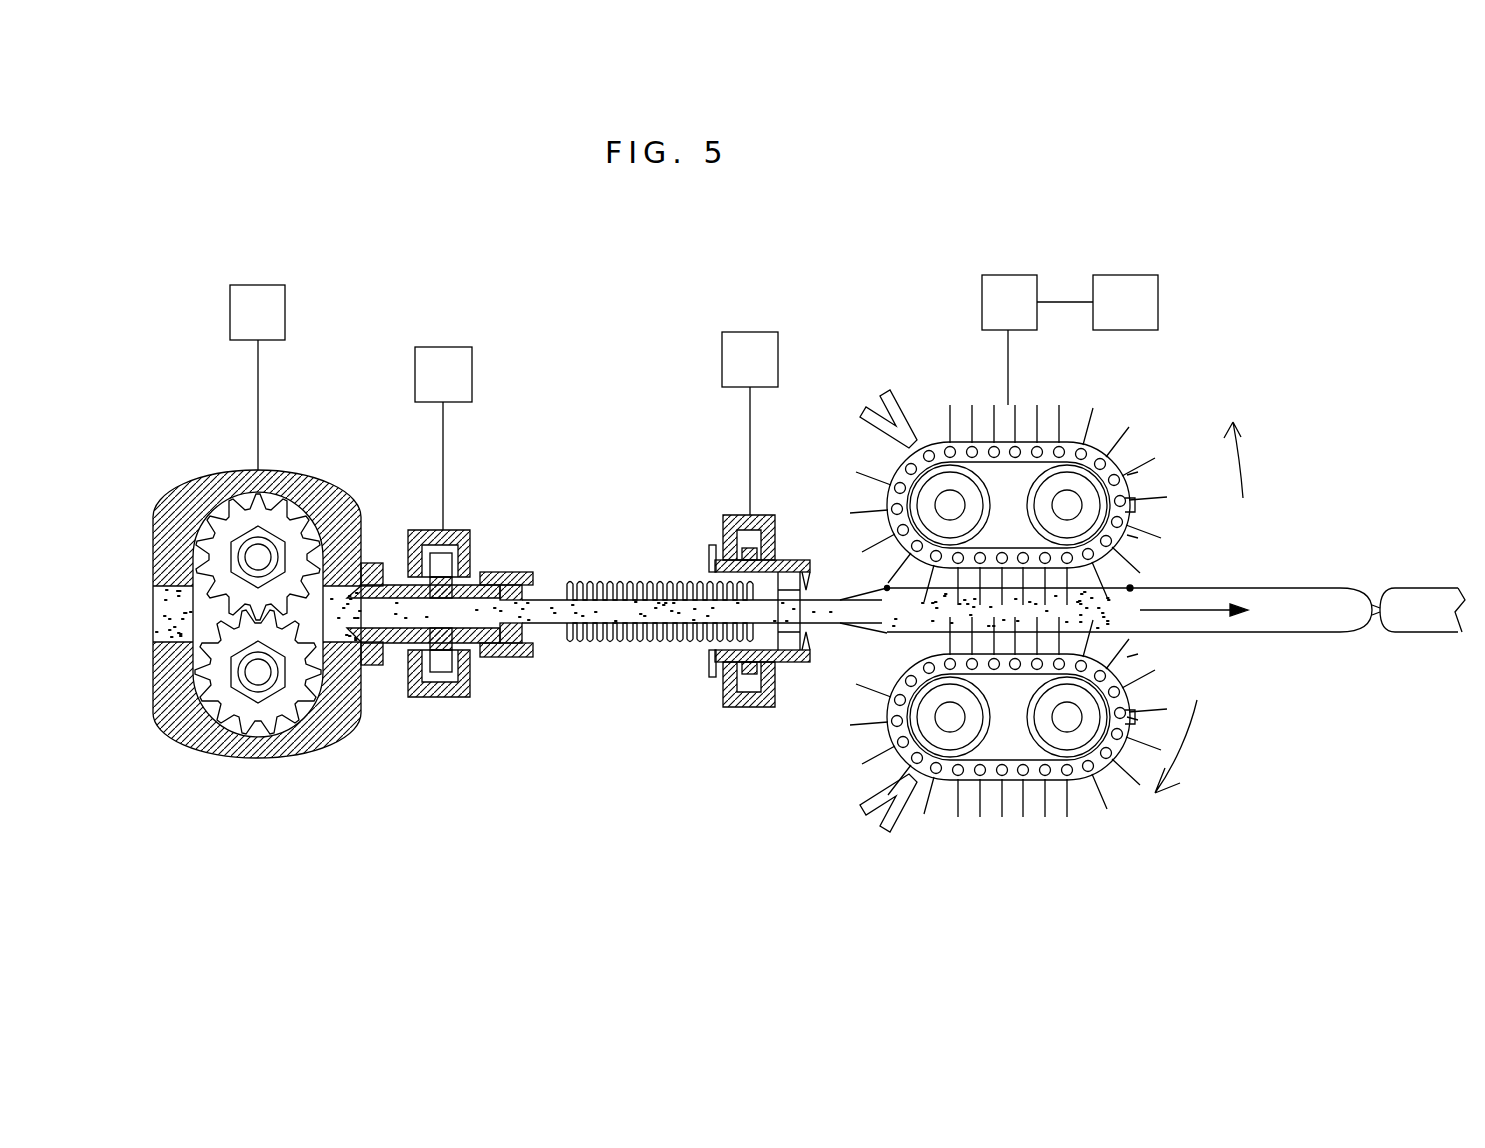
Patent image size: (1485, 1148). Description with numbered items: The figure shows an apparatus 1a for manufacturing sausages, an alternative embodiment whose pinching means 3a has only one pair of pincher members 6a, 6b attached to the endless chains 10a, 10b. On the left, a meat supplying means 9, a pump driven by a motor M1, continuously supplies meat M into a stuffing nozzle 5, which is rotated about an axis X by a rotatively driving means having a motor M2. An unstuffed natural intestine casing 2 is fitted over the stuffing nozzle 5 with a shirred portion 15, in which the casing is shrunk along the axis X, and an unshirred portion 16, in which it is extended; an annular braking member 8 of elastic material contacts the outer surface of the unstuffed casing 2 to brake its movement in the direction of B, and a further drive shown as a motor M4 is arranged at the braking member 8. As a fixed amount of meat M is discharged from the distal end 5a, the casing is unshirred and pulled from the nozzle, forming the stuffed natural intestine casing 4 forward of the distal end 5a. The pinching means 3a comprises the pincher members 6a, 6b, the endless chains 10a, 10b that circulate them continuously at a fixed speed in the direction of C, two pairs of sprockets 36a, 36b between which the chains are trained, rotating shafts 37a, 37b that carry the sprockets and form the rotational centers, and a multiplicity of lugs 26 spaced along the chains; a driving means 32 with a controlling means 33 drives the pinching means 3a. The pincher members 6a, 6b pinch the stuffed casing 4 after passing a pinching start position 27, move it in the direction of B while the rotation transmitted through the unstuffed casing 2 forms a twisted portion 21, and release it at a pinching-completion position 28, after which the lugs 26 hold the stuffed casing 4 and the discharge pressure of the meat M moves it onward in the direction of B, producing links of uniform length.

The apparatus for manufacturing sausages 1a is at (1029, 529).
The pinching means 3a is at (1033, 780).
The unstuffed natural intestine casing 2 is at (643, 578).
The stuffed natural intestine casing 4 is at (1290, 605).
The stuffing nozzle 5 is at (548, 598).
The distal end 5a is at (884, 630).
The pincher member 6a is at (903, 433).
The pincher member 6b is at (900, 797).
The braking member 8 is at (797, 562).
The meat supplying means 9 is at (300, 470).
The endless chain 10a is at (1067, 505).
The endless chain 10b is at (952, 800).
The shirred portion 15 is at (623, 647).
The unshirred portion 16 is at (810, 624).
The twisted portion 21 is at (1373, 632).
The lugs 26 is at (1130, 447).
The pinching start position 27 is at (886, 588).
The pinching-completion position 28 is at (1130, 588).
The driving means 32 is at (1101, 288).
The controlling means 33 is at (1135, 298).
The sprockets 36a is at (1038, 450).
The sprockets 36b is at (905, 720).
The rotating shafts 37a is at (950, 505).
The rotating shafts 37b is at (900, 775).
The direction of B is at (1180, 612).
The direction of C is at (1243, 495).
The axis X is at (662, 648).
The meat M is at (317, 622).
The motor M1 is at (257, 377).
The motor M2 is at (440, 522).
The motor 4 M4 is at (750, 519).